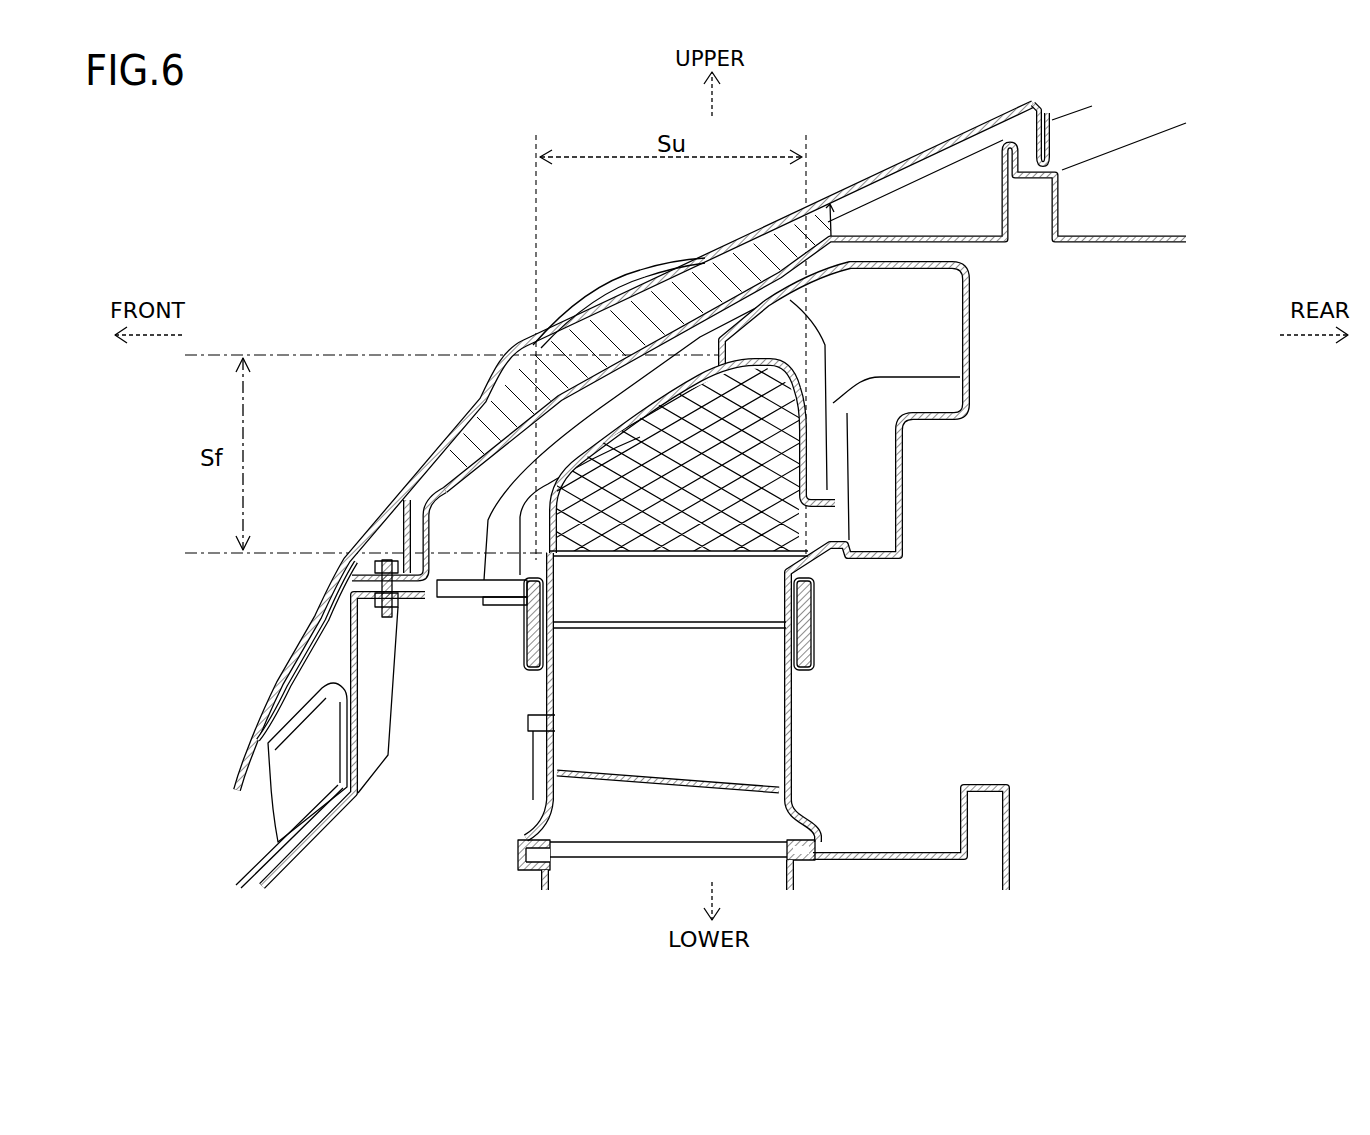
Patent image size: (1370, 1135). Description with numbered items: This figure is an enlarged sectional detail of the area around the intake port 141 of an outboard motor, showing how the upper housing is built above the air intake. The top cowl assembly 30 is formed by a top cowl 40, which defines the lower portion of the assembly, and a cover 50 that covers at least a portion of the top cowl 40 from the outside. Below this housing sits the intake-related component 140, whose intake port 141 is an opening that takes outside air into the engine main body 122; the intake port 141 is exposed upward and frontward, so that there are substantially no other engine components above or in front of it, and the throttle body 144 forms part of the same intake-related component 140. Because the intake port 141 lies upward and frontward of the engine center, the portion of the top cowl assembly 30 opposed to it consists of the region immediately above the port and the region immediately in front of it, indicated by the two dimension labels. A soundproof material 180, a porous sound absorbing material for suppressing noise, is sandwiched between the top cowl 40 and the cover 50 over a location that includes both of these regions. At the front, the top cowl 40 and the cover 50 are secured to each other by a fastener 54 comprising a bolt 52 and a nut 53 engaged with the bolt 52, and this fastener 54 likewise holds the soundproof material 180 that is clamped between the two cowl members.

The top cowl assembly 30 is at (985, 70).
The top cowl 40 is at (907, 232).
The cover 50 is at (968, 126).
The soundproof material 180 is at (682, 303).
The intake-related component 140 is at (478, 428).
The intake port 141 is at (436, 458).
The engine main body 122 is at (882, 577).
The throttle body 144 is at (607, 790).
The fastener 54 is at (185, 603).
The bolt 52 is at (355, 562).
The nut 53 is at (372, 600).